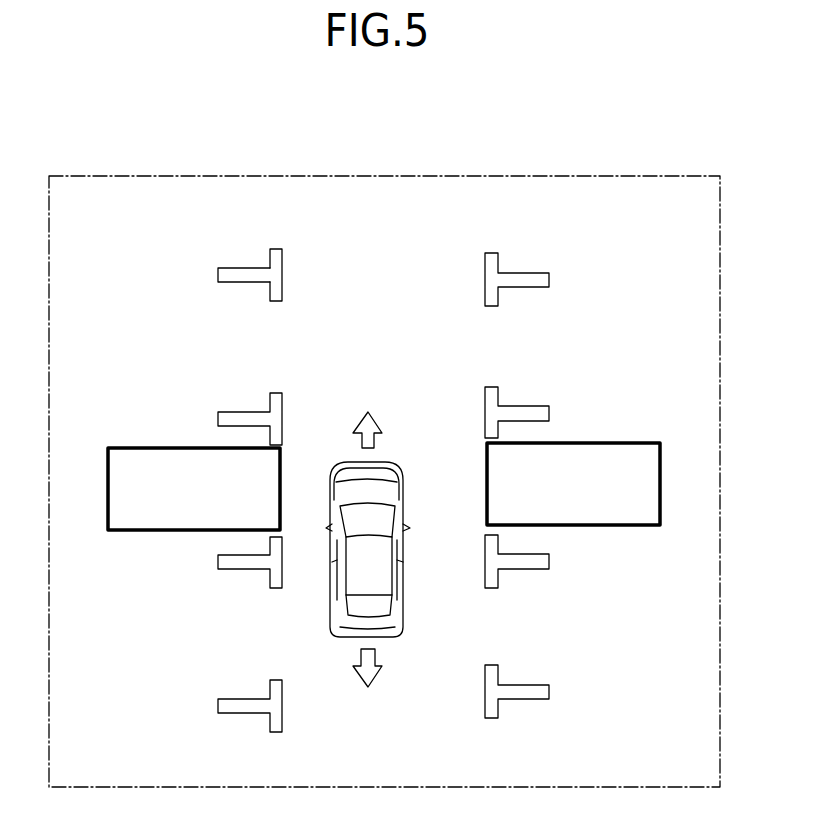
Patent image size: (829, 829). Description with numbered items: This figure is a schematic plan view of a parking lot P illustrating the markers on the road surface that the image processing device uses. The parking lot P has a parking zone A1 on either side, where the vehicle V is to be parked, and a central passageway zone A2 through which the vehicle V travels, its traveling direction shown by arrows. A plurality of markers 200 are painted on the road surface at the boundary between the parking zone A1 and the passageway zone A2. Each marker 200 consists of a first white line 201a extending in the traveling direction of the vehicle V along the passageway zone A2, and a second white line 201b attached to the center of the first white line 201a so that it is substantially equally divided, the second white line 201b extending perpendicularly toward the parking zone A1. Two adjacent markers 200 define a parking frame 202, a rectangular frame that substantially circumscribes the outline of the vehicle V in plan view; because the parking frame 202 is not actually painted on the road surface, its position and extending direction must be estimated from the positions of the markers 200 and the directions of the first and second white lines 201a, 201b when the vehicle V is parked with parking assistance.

The parking lot P is at (465, 176).
The parking zone A1 is at (150, 217).
The passageway zone A2 is at (390, 220).
The marker 200 is at (381, 456).
The first white line 201a is at (285, 263).
The second white line 201b is at (232, 284).
The parking frame 202 is at (132, 531).
The vehicle V is at (400, 503).